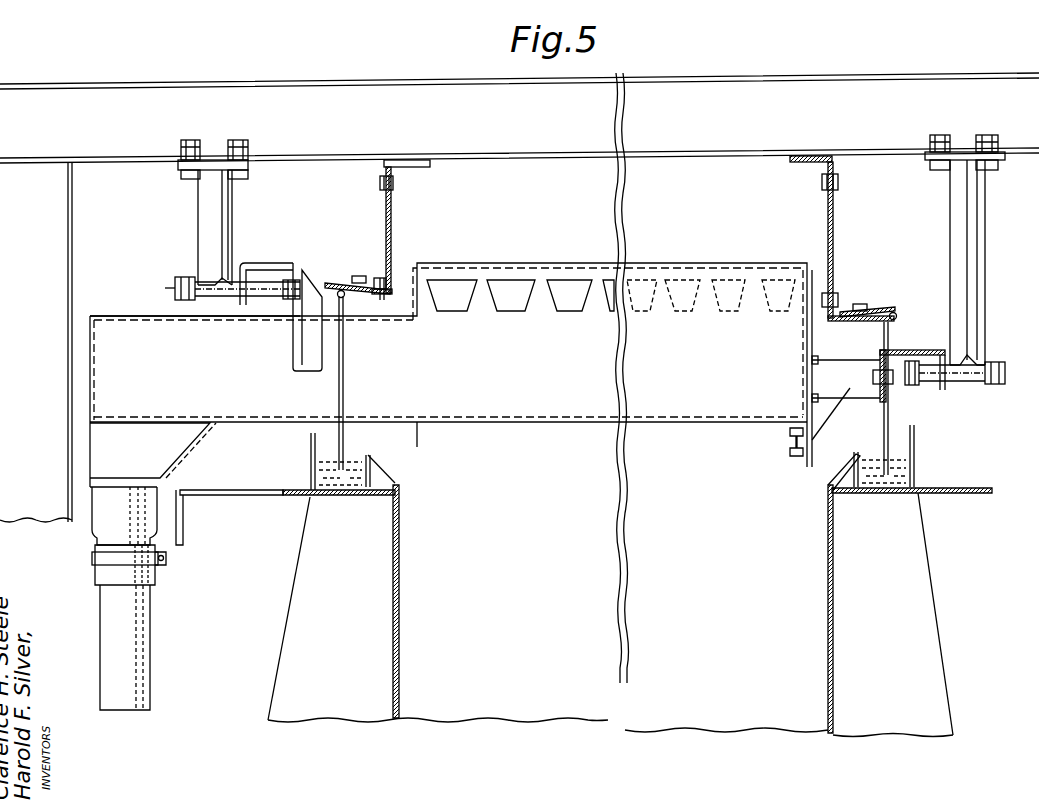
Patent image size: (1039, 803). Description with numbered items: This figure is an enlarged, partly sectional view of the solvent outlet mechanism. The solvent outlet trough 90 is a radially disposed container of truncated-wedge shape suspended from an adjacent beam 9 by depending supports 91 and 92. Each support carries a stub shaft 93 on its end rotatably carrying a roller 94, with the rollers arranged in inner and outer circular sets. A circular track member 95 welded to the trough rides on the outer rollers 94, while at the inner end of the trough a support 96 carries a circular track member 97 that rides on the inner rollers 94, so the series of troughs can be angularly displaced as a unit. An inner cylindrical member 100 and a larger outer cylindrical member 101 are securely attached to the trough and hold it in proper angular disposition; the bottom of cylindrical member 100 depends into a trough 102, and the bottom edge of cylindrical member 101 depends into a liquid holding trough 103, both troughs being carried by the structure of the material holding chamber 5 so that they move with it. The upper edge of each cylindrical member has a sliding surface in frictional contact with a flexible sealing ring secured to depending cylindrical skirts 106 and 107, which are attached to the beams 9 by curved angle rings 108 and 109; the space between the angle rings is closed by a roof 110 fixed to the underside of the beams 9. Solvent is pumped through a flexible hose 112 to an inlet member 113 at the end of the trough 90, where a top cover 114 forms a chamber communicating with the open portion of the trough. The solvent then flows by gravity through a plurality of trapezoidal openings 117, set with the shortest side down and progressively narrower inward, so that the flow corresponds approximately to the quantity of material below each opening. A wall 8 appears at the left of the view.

The material holding chamber 5 is at (826, 592).
The wall 8 is at (58, 247).
The beam 9 is at (247, 94).
The solvent outlet trough 90 is at (512, 422).
The depending support 91 is at (228, 190).
The depending support 92 is at (985, 225).
The stub shaft 93 is at (166, 288).
The roller 94 is at (250, 265).
The track member 95 is at (283, 262).
The support 96 is at (846, 388).
The circular track member 97 is at (905, 350).
The cylindrical member 100 is at (893, 414).
The cylindrical member 101 is at (346, 374).
The trough 102 is at (918, 447).
The liquid holding trough 103 is at (308, 448).
The depending cylindrical skirt 106 is at (826, 215).
The depending cylindrical skirt 107 is at (394, 213).
The curved angle ring 108 is at (805, 156).
The curved angle ring 109 is at (400, 158).
The roof 110 is at (578, 153).
The flexible hose 112 is at (145, 648).
The inlet member 113 is at (105, 497).
The top cover 114 is at (190, 322).
The openings 117 is at (560, 280).